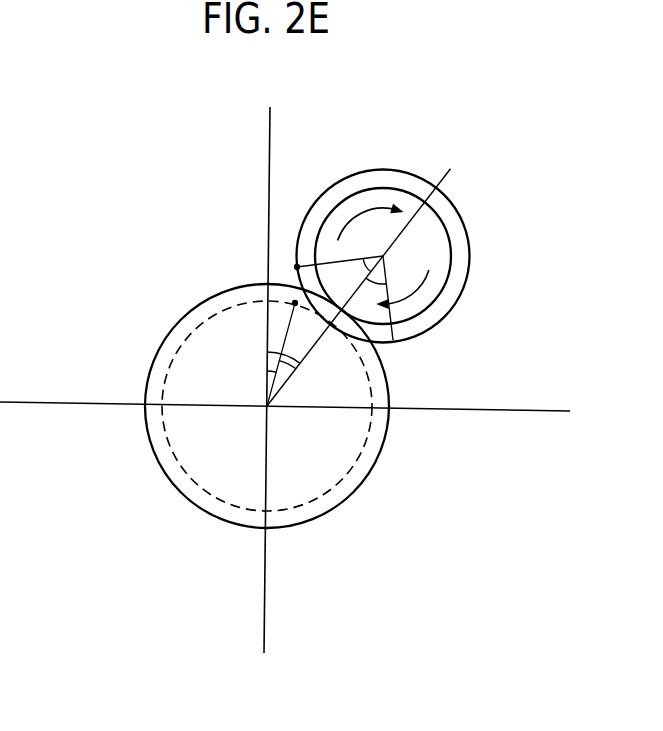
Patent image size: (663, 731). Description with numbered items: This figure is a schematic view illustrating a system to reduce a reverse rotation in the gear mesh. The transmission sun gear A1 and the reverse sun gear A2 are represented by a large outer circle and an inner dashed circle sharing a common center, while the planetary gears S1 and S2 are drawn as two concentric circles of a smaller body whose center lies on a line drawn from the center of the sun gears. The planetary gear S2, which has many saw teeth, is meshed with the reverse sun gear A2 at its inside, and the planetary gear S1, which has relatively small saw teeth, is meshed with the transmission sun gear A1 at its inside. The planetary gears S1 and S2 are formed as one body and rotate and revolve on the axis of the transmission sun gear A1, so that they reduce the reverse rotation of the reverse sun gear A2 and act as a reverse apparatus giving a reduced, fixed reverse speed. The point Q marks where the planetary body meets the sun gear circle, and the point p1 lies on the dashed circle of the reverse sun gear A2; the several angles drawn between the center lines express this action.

The transmission sun gear A1 is at (172, 333).
The reverse sun gear A2 is at (168, 376).
The planetary gear S1 is at (451, 233).
The planetary gear S2 is at (452, 202).
The contact point Q is at (330, 269).
The point p1 on circle A2 p1 is at (262, 354).